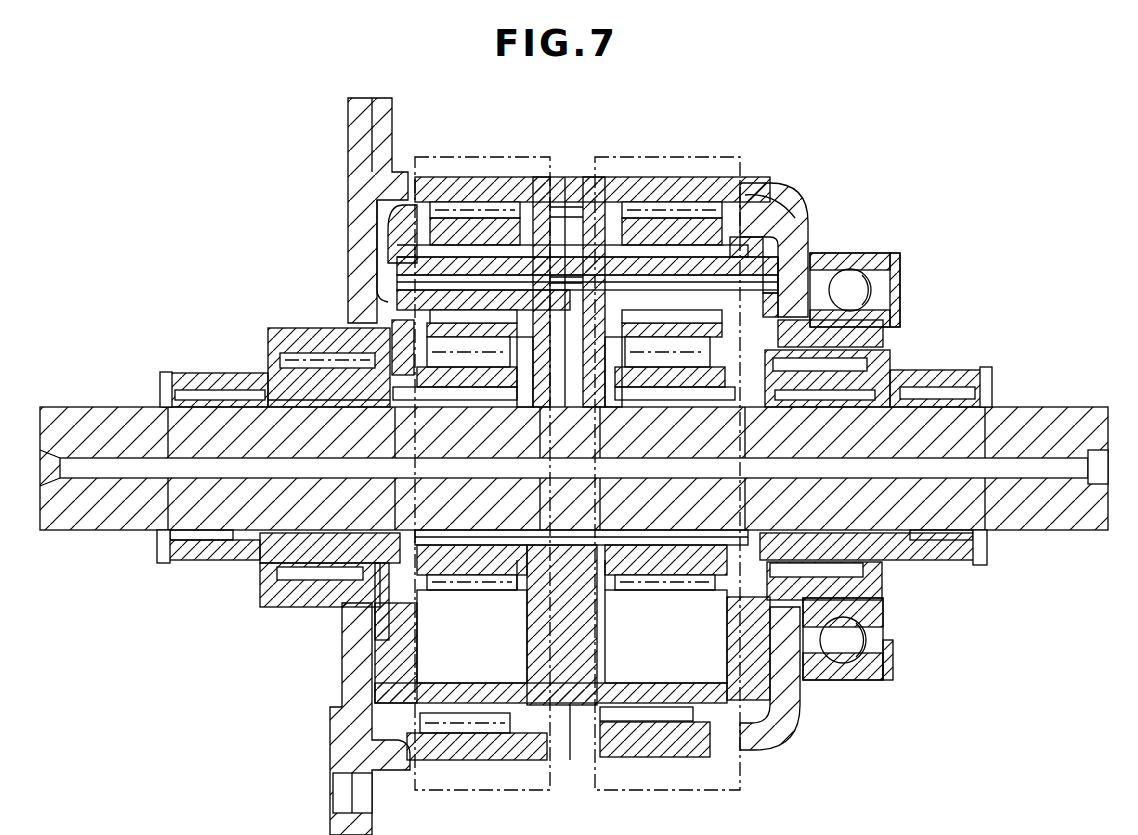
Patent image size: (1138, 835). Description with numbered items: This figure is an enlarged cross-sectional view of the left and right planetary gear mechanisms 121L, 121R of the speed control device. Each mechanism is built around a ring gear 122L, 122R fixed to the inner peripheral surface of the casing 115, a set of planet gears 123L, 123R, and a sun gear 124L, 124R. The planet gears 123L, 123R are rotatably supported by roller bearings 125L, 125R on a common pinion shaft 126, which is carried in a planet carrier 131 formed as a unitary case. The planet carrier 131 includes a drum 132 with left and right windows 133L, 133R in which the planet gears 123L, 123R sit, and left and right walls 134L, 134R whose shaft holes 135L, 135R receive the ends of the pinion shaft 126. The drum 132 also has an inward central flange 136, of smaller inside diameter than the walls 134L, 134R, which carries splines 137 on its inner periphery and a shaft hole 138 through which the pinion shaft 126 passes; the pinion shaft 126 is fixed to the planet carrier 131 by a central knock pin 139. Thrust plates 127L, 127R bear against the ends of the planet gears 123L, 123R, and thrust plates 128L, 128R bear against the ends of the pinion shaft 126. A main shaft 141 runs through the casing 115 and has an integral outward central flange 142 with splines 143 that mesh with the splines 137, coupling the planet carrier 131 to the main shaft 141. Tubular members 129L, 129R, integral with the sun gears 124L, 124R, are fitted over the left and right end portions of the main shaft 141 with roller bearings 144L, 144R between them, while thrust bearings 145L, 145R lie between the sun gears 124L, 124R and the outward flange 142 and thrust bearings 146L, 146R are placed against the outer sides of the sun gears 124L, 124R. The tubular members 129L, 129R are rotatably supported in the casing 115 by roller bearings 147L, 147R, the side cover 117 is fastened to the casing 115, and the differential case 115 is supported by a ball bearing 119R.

The casing 115 is at (786, 732).
The side cover 117 is at (348, 738).
The ball bearing 119R is at (855, 655).
The planetary gear mechanism 121L is at (478, 150).
The planetary gear mechanism 121R is at (702, 150).
The ring gear 122L is at (450, 722).
The ring gear 122R is at (668, 716).
The planet gear 123L is at (385, 200).
The planet gear 123R is at (772, 196).
The sun gear 124L is at (452, 575).
The sun gear 124R is at (670, 585).
The roller bearing 125L is at (460, 225).
The roller bearing 125R is at (662, 230).
The pinion shaft 126 is at (500, 255).
The thrust plate 127L is at (398, 222).
The thrust plate 127R is at (792, 226).
The thrust plate 128L is at (396, 296).
The thrust plate 128R is at (840, 256).
The tubular member 129L is at (320, 385).
The tubular member 129R is at (852, 392).
The planet carrier 131 is at (568, 722).
The drum 132 is at (490, 745).
The window 133L is at (545, 250).
The window 133R is at (600, 250).
The wall 134L is at (372, 668).
The wall 134R is at (788, 700).
The shaft hole 135L is at (400, 248).
The shaft hole 135R is at (782, 262).
The inward central flange 136 is at (548, 636).
The splines 137 is at (560, 580).
The shaft hole 138 is at (610, 362).
The central knock pin 139 is at (566, 260).
The main shaft 141 is at (1042, 418).
The outward central flange 142 is at (525, 575).
The splines 143 is at (602, 600).
The roller bearing 144L is at (188, 560).
The roller bearing 144R is at (968, 560).
The thrust bearing 145L is at (522, 450).
The thrust bearing 145R is at (610, 458).
The thrust bearing 146L is at (393, 322).
The thrust bearing 146R is at (852, 345).
The roller bearing 147L is at (290, 583).
The roller bearing 147R is at (878, 595).